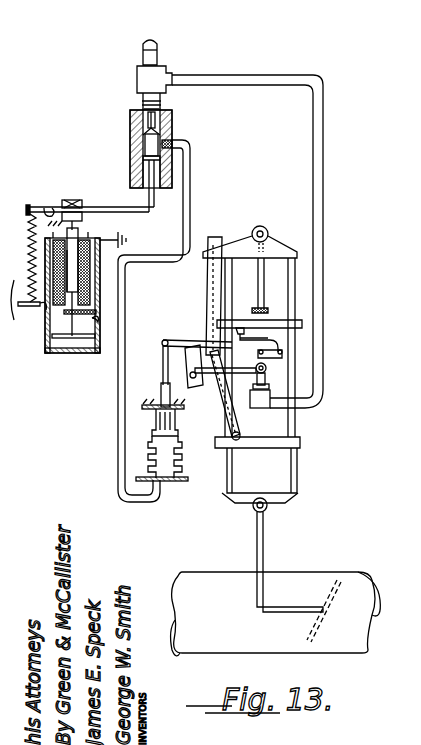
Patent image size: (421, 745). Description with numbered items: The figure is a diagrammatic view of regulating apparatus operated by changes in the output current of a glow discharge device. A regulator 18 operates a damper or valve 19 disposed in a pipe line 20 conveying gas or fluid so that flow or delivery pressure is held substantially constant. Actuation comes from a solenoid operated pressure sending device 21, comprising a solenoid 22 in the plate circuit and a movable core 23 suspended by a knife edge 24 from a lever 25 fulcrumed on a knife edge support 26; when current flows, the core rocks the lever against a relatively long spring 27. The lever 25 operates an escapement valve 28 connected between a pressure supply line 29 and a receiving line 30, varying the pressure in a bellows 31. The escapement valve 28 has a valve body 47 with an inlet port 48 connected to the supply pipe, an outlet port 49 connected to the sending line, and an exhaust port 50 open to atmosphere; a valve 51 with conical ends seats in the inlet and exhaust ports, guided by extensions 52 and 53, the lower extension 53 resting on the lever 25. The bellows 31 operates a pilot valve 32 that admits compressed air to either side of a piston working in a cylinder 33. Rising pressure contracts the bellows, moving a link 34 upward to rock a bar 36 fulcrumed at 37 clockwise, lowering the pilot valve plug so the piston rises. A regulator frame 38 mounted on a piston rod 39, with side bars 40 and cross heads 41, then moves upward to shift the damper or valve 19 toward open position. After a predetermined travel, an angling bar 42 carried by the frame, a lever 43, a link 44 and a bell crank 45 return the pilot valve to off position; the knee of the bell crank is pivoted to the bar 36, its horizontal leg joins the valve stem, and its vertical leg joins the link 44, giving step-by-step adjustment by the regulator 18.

The regulator 18 is at (353, 366).
The damper or valve 19 is at (332, 580).
The pipe line 20 is at (348, 636).
The solenoid operated pressure sending device 21 is at (68, 196).
The solenoid 22 is at (88, 241).
The movable core 23 is at (73, 278).
The knife edge 24 is at (80, 205).
The lever 25 is at (135, 215).
The knife edge support 26 is at (46, 206).
The spring 27 is at (28, 277).
The escapement valve 28 is at (140, 155).
The pressure supply line 29 is at (158, 48).
The receiving line 30 is at (186, 208).
The bellows 31 is at (180, 454).
The pilot valve 32 is at (263, 403).
The cylinder 33 is at (272, 427).
The link 34 is at (161, 375).
The bar 36 is at (176, 330).
The fulcrum 37 is at (236, 328).
The regulator frame 38 is at (285, 295).
The piston rod 39 is at (250, 275).
The side bars 40 is at (293, 271).
The cross heads 41 is at (268, 240).
The angling bar 42 is at (208, 300).
The lever 43 is at (222, 398).
The link 44 is at (222, 372).
The bell crank 45 is at (283, 358).
The valve body 47 is at (173, 130).
The inlet port 48 is at (143, 140).
The outlet port 49 is at (172, 146).
The exhaust port 50 is at (142, 170).
The valve 51 is at (165, 166).
The extension 52 is at (148, 126).
The extension 53 is at (156, 200).